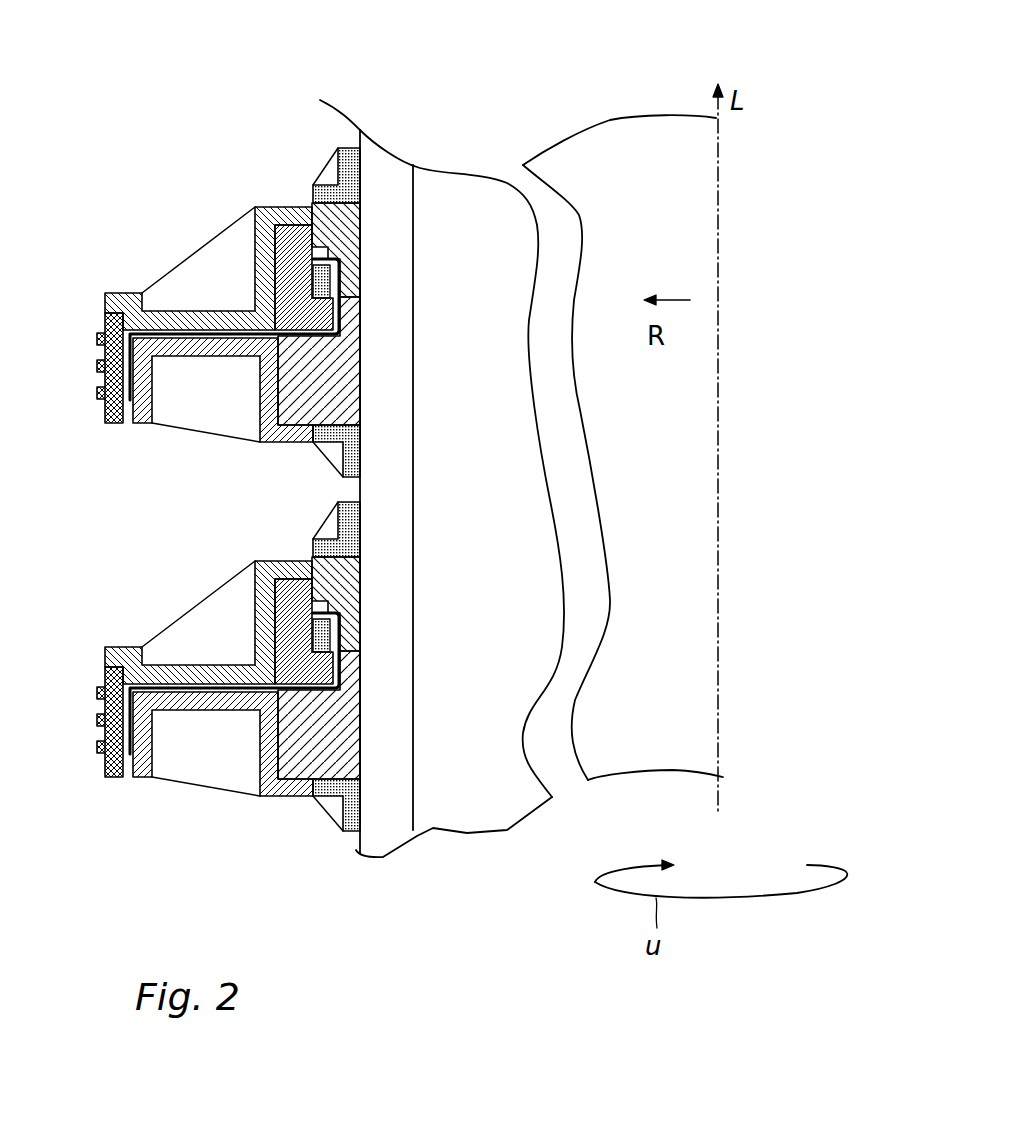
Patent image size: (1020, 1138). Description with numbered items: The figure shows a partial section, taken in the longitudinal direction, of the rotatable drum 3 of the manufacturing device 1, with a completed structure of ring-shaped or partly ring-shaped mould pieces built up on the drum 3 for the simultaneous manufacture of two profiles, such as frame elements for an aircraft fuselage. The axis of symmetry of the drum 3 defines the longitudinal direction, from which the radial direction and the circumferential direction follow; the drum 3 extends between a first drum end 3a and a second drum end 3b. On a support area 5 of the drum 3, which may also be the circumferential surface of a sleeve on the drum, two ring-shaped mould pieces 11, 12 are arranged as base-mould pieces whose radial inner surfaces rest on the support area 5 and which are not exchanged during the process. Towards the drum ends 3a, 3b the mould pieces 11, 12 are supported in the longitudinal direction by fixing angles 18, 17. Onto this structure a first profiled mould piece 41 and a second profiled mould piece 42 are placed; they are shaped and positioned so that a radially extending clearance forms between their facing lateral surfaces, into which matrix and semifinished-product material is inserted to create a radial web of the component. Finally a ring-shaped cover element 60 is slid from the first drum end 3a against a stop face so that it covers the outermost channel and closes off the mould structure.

The manufacturing device 1 is at (408, 68).
The drum 3 is at (390, 155).
The first drum end 3a is at (472, 940).
The second drum end 3b is at (487, 80).
The support area 5 is at (352, 136).
The ring-shaped mould piece 11 is at (360, 370).
The ring-shaped mould piece 12 is at (360, 247).
The fixing angle 17 is at (337, 448).
The fixing angle 18 is at (312, 188).
The first profiled mould piece 41 is at (142, 425).
The second profiled mould piece 42 is at (130, 292).
The ring-shaped cover element 60 is at (106, 418).